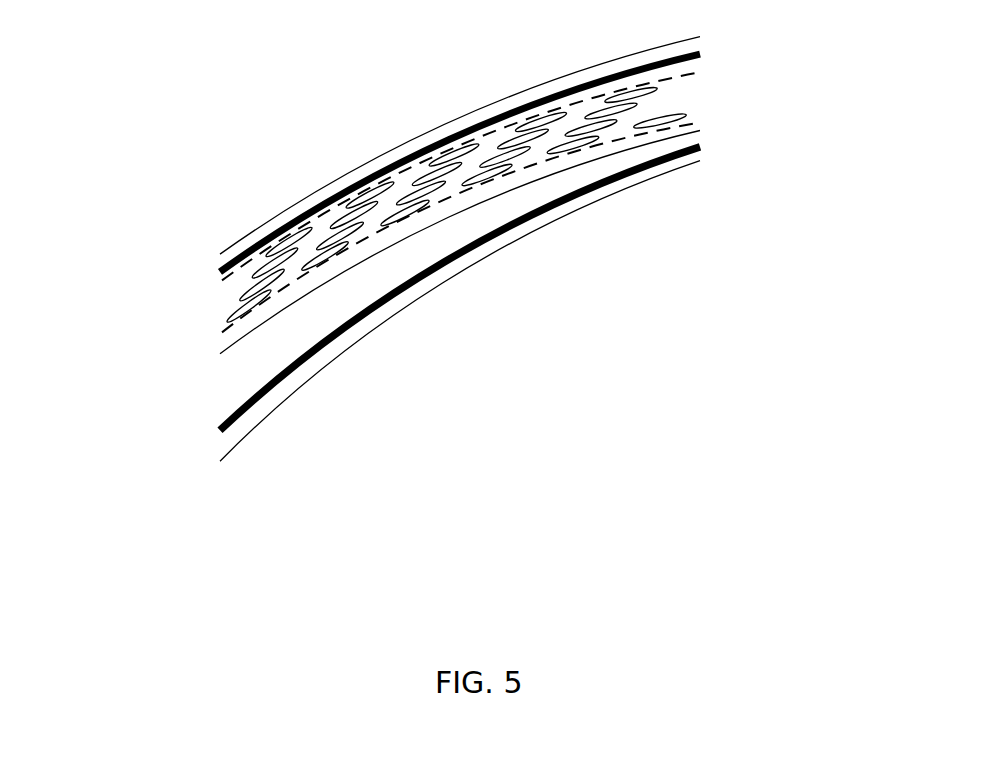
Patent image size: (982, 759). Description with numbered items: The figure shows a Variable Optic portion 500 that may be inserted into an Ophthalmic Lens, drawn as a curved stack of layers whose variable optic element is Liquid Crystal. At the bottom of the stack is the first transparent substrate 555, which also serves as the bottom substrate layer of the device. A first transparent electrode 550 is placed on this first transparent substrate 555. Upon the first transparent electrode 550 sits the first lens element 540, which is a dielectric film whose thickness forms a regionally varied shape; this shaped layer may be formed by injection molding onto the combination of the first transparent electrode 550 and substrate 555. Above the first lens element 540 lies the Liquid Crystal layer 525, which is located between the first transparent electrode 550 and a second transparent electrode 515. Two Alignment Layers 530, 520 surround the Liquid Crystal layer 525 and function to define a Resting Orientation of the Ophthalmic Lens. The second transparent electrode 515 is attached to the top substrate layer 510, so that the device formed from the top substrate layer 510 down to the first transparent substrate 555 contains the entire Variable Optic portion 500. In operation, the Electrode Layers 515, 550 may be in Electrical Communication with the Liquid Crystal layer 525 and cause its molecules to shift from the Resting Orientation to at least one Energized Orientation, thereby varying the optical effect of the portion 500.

The Variable Optic portion 500 is at (569, 340).
The top substrate layer 510 is at (690, 47).
The second transparent electrode 515 is at (220, 273).
The Alignment Layer 520 is at (690, 70).
The Liquid Crystal layer 525 is at (228, 302).
The Alignment Layer 530 is at (690, 115).
The first lens element 540 is at (238, 370).
The first transparent electrode 550 is at (693, 152).
The first transparent substrate 555 is at (230, 438).